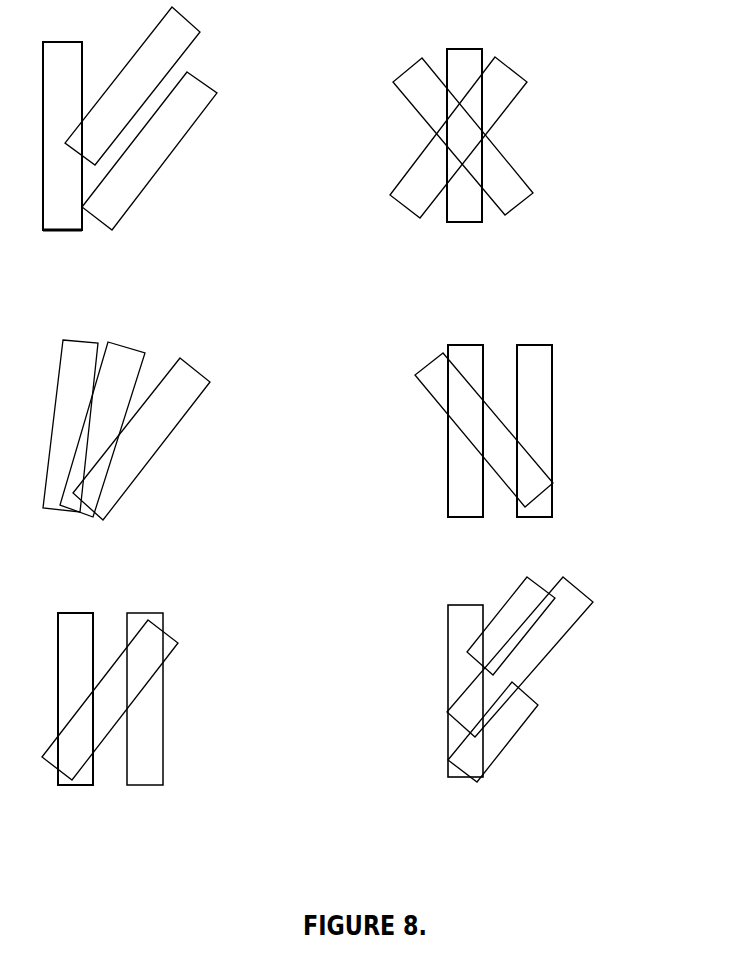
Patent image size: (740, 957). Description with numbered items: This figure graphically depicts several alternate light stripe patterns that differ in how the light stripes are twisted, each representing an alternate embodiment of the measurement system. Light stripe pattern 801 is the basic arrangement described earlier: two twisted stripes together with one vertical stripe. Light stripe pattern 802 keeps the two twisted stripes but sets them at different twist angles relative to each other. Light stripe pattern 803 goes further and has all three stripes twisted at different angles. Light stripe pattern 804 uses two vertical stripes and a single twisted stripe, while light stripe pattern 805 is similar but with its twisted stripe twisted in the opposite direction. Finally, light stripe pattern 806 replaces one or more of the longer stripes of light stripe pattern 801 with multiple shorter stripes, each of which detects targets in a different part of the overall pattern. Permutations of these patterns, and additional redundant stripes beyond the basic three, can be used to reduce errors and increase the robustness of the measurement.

The light stripe pattern 801 is at (144, 124).
The light stripe pattern 802 is at (500, 141).
The light stripe pattern 803 is at (147, 430).
The light stripe pattern 804 is at (531, 433).
The light stripe pattern 805 is at (149, 702).
The light stripe pattern 806 is at (541, 684).